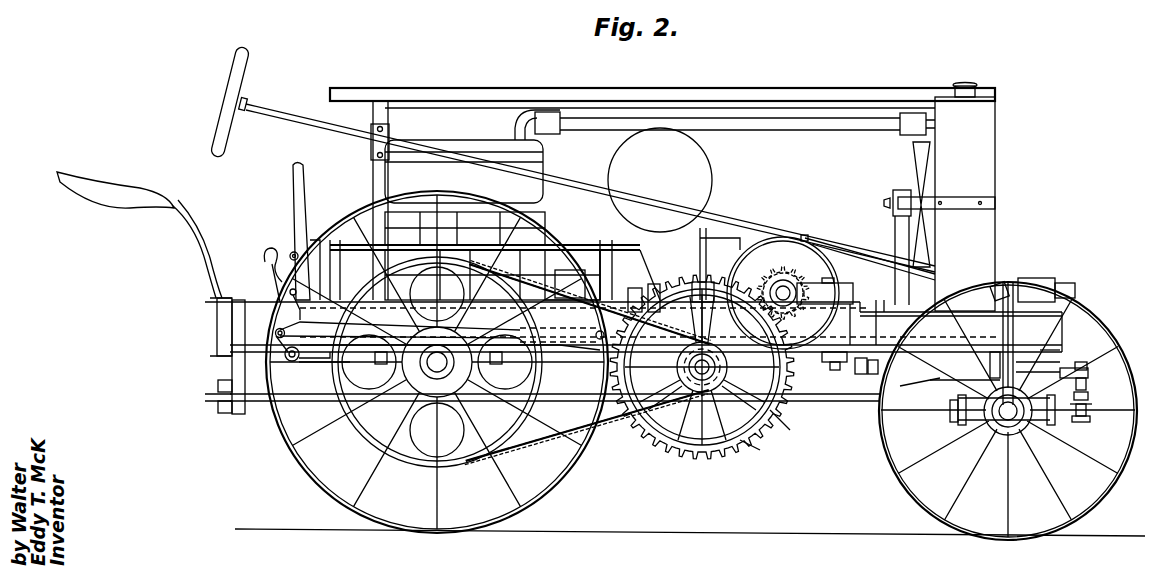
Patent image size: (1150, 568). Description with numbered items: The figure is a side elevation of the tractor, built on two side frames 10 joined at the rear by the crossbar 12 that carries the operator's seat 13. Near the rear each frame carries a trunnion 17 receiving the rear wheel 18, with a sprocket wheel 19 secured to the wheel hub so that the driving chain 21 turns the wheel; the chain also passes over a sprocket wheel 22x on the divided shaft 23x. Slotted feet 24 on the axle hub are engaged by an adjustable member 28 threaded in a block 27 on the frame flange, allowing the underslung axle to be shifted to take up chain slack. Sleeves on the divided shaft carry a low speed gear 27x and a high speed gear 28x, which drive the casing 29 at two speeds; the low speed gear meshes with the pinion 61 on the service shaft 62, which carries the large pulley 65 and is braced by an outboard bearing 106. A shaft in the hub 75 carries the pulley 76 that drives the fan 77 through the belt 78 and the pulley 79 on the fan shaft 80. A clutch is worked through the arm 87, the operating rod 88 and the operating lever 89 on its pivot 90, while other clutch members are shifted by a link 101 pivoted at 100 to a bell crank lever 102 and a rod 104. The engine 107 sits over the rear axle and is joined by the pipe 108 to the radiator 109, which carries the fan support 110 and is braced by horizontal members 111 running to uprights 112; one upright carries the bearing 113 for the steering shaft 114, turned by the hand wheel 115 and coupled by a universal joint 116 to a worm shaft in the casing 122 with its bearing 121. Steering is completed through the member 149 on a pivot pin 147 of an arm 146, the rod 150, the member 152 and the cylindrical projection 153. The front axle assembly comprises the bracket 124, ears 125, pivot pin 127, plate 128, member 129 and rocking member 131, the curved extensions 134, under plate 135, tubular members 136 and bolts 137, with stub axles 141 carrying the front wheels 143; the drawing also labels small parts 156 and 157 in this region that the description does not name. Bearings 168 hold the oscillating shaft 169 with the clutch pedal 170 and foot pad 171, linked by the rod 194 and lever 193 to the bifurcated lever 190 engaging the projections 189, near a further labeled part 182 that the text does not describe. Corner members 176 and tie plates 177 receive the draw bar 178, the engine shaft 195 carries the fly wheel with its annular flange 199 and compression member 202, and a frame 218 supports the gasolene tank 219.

The side frame 10 is at (1050, 322).
The crossbar 12 is at (217, 320).
The operator's seat 13 is at (99, 198).
The trunnion 17 is at (437, 372).
The rear wheel 18 is at (562, 484).
The sprocket wheel 19 is at (522, 440).
The driving chain 21 is at (468, 466).
The sprocket wheel 22x is at (702, 393).
The divided shaft 23x is at (702, 345).
The feet 24 is at (402, 385).
The block 27 is at (363, 353).
The low speed gear 27x is at (748, 442).
The adjustable member 28 is at (440, 369).
The high speed gear 28x is at (775, 415).
The casing 29 is at (690, 435).
The pinion 61 is at (768, 283).
The service shaft 62 is at (796, 294).
The pulley 65 is at (790, 238).
The hub 75 is at (850, 308).
The pulley 76 is at (877, 300).
The fan 77 is at (912, 156).
The belt 78 is at (893, 238).
The pulley 79 is at (890, 195).
The fan shaft 80 is at (884, 204).
The arm 87 is at (808, 236).
The operating rod 88 is at (313, 242).
The operating lever 89 is at (292, 182).
The pivot 90 is at (298, 300).
The pivot 100 is at (832, 293).
The link 101 is at (834, 280).
The bell crank lever 102 is at (838, 256).
The rod 104 is at (342, 240).
The outboard bearing 106 is at (793, 286).
The engine 107 is at (468, 140).
The pipe 108 is at (788, 128).
The radiator 109 is at (980, 130).
The support 110 is at (968, 204).
The horizontal member 111 is at (692, 100).
The upright 112 is at (389, 111).
The bearing 113 is at (372, 141).
The shaft 114 is at (286, 110).
The hand wheel 115 is at (246, 66).
The universal joint 116 is at (1002, 282).
The bearing 121 is at (1055, 350).
The casing 122 is at (1044, 278).
The bracket 124 is at (1014, 360).
The ears 125 is at (998, 352).
The pivot pin 127 is at (990, 364).
The horizontal plate 128 is at (830, 356).
The member 129 is at (835, 370).
The rocking member 131 is at (872, 376).
The curved extensions 134 is at (975, 381).
The under plate 135 is at (950, 412).
The tubular member 136 is at (956, 420).
The bolt 137 is at (960, 425).
The stub axle 141 is at (1004, 425).
The front wheel 143 is at (1070, 520).
The arm 146 is at (1084, 424).
The pivot pin 147 is at (1086, 414).
The member 149 is at (1089, 398).
The rod 150 is at (1087, 384).
The member 152 is at (1088, 366).
The cylindrical projection 153 is at (1058, 372).
The brace rod 156 is at (916, 384).
The bracket 157 is at (858, 372).
The bearing 168 is at (313, 362).
The oscillating shaft 169 is at (292, 362).
The clutch pedal 170 is at (270, 282).
The foot pad 171 is at (264, 260).
The corner member 176 is at (240, 416).
The tie plate 177 is at (218, 384).
The draw bar 178 is at (206, 399).
The gear shifter 182 is at (655, 282).
The projections 189 is at (645, 246).
The bifurcated lever 190 is at (634, 287).
The lever 193 is at (596, 334).
The rod 194 is at (560, 378).
The engine shaft 195 is at (566, 274).
The annular flange 199 is at (578, 242).
The compression member 202 is at (690, 260).
The frame 218 is at (716, 234).
The gasolene tank 219 is at (702, 160).